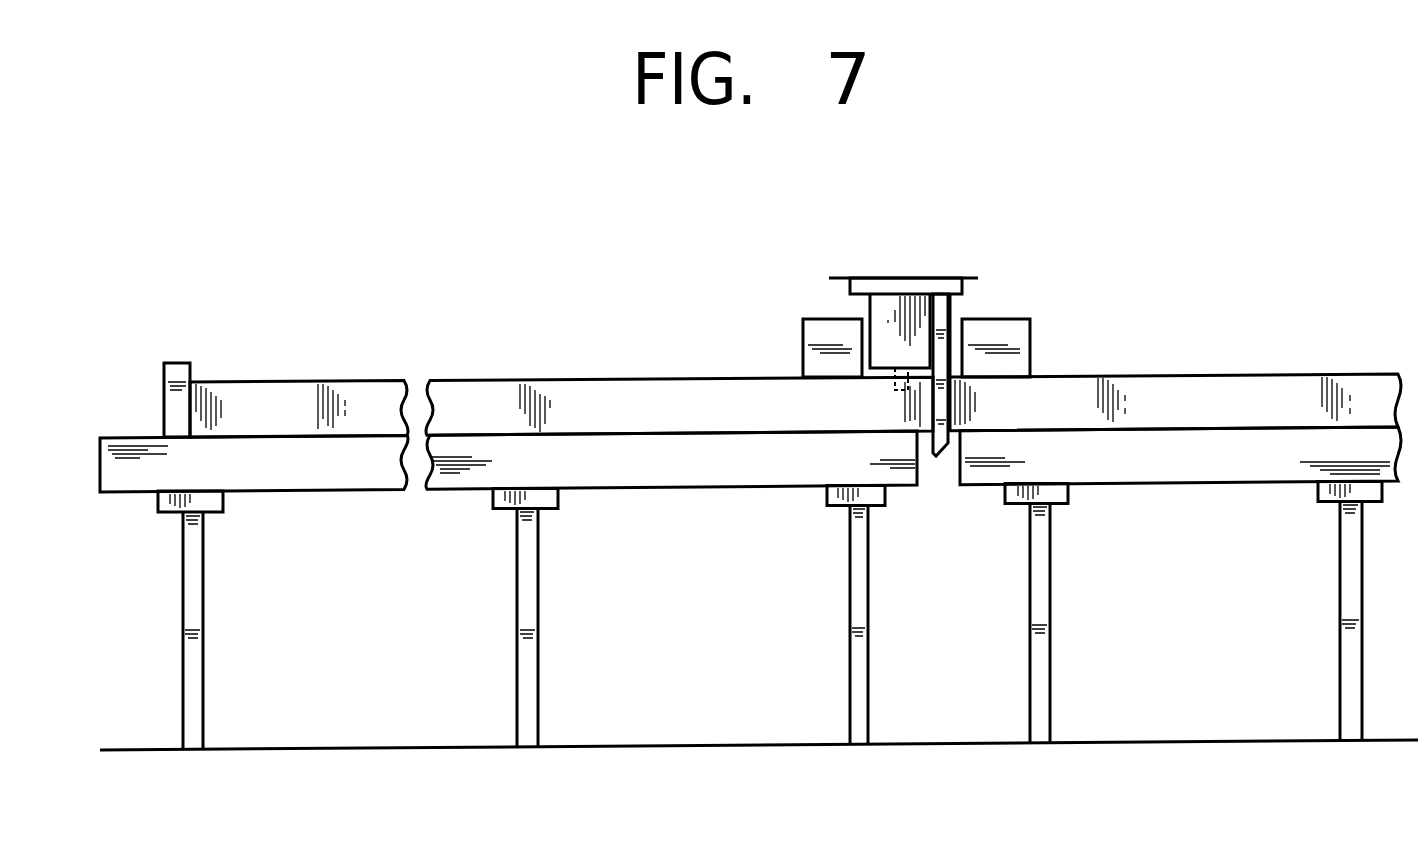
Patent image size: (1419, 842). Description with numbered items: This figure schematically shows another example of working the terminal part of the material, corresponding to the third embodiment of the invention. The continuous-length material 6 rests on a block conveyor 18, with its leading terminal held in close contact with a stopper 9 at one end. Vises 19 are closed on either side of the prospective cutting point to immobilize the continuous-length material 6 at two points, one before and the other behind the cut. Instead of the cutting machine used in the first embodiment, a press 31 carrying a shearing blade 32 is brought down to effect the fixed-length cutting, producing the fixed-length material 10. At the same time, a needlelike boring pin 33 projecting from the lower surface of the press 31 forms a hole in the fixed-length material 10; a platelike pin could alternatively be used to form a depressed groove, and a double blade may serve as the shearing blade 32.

The continuous-length material 6 is at (1175, 388).
The stopper 9 is at (178, 363).
The fixed-length material 10 is at (587, 392).
The block conveyor 18 is at (1178, 472).
The vises 19 is at (818, 328).
The press 31 is at (900, 312).
The shearing blade 32 is at (950, 313).
The needlelike boring pin 33 is at (903, 392).